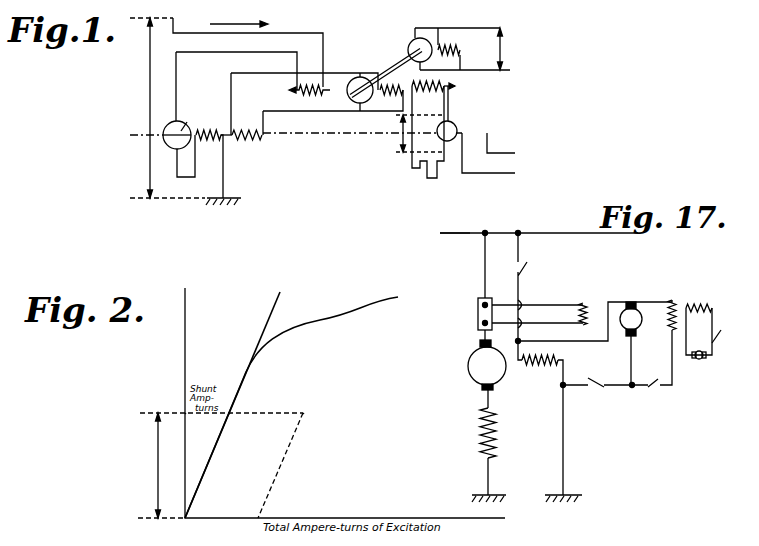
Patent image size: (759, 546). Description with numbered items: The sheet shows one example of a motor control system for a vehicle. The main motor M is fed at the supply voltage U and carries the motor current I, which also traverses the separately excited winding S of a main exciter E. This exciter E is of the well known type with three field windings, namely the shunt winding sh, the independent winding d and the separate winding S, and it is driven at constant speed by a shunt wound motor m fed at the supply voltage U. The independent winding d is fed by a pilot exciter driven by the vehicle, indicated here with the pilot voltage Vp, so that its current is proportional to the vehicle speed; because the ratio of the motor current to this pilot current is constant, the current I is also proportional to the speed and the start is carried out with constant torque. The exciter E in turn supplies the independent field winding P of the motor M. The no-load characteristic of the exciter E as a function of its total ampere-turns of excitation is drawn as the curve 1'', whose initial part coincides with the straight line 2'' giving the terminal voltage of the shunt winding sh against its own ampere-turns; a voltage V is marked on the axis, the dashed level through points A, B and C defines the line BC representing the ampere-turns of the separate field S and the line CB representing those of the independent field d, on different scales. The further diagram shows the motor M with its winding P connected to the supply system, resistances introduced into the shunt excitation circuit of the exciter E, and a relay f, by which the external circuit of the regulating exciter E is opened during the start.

In FIG. 1, the supply voltage U is at (317, 108).
In FIG. 17, the supply voltage U is at (455, 225).
In FIG. 1, the motor current I is at (230, 22).
In FIG. 1, the motor M is at (181, 126).
In FIG. 17, the motor M is at (476, 365).
In FIG. 1, the independent field winding P is at (351, 128).
In FIG. 17, the independent field winding P is at (540, 372).
In FIG. 1, the separately excited winding S is at (306, 97).
In FIG. 1, the exciter E is at (360, 76).
In FIG. 17, the exciter E is at (637, 320).
In FIG. 1, the shunt winding sh is at (391, 97).
In FIG. 1, the shunt wound motor m is at (426, 41).
In FIG. 1, the independent winding d is at (428, 129).
In FIG. 1, the pilot voltage Vp is at (396, 134).
In FIG. 2, the voltage V is at (149, 465).
In FIG. 2, the point A on characteristic A is at (192, 421).
In FIG. 2, the point B is at (235, 421).
In FIG. 2, the point C is at (310, 405).
In FIG. 2, the no-load characteristic 1'' is at (301, 404).
In FIG. 2, the straight line 2'' is at (243, 398).
In FIG. 17, the relay / contactor f is at (703, 344).